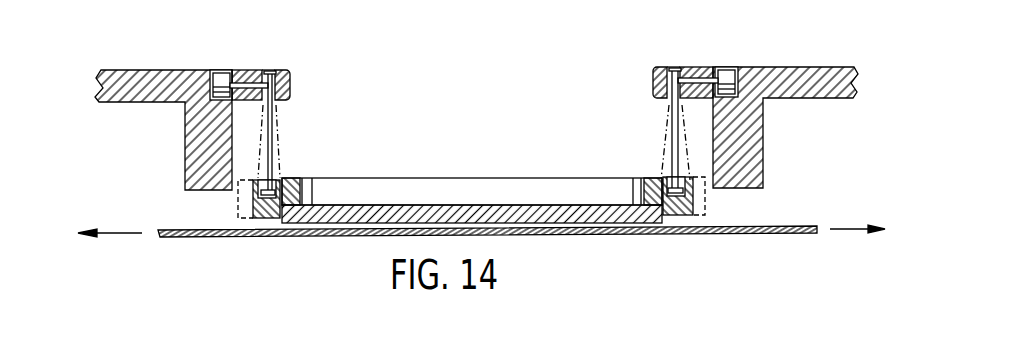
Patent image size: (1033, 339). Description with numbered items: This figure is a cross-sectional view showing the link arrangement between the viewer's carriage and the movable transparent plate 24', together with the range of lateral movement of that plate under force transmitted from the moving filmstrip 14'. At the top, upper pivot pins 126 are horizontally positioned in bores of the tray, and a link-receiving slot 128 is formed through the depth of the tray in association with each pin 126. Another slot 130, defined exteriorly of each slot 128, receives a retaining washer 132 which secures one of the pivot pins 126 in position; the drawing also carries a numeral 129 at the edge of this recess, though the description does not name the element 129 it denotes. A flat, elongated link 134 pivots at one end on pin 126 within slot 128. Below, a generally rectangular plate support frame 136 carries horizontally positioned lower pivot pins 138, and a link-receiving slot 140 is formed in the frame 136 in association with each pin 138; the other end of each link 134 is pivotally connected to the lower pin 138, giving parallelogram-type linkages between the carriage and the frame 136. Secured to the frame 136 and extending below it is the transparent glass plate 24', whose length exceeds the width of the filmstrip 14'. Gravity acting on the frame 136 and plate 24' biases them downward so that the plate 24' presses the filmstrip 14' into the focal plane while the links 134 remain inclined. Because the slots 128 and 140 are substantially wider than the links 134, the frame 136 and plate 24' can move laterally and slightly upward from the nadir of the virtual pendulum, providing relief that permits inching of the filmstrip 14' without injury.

The slot 130 is at (110, 70).
The recess 129 is at (212, 69).
The retaining washer 132 is at (222, 77).
The upper pivot pin 126 is at (247, 69).
The link-receiving slot 128 is at (280, 69).
The link 134 is at (271, 136).
The link-receiving slot 140 is at (280, 172).
The lower pivot pin 138 is at (252, 203).
The plate support frame 136 is at (267, 222).
The transparent plate 24' is at (472, 187).
The filmstrip 14' is at (481, 244).